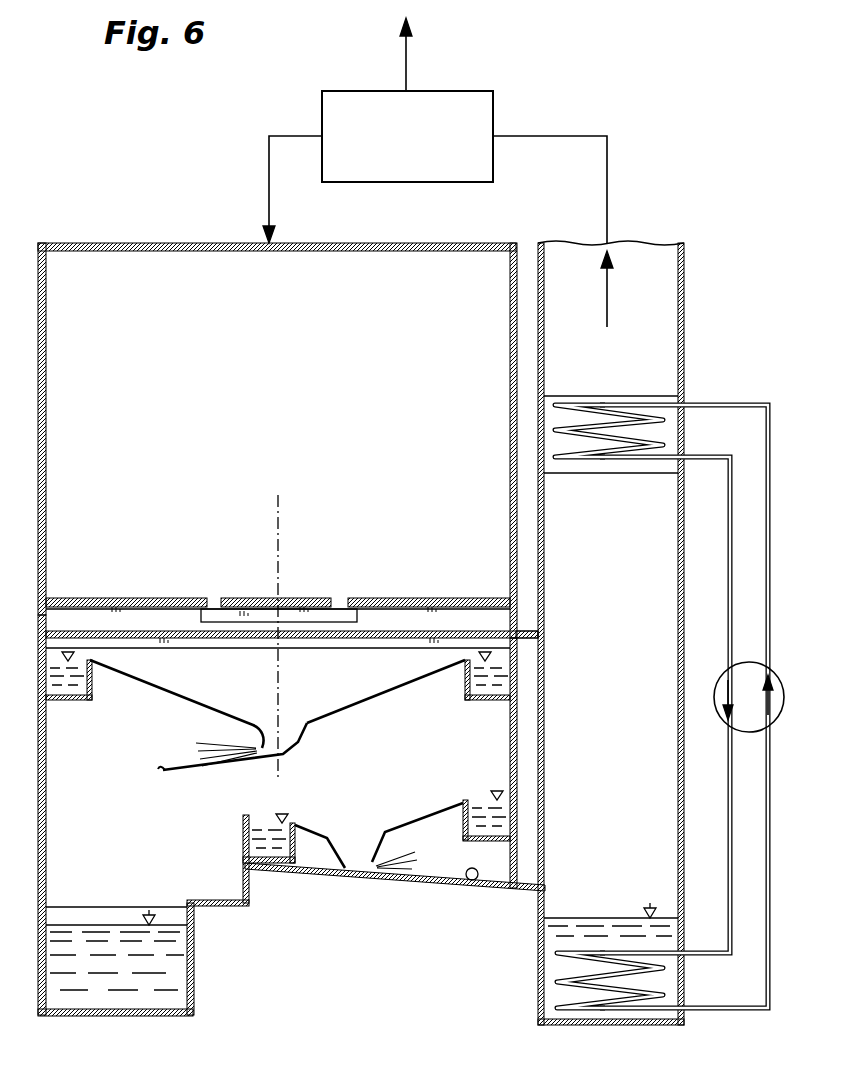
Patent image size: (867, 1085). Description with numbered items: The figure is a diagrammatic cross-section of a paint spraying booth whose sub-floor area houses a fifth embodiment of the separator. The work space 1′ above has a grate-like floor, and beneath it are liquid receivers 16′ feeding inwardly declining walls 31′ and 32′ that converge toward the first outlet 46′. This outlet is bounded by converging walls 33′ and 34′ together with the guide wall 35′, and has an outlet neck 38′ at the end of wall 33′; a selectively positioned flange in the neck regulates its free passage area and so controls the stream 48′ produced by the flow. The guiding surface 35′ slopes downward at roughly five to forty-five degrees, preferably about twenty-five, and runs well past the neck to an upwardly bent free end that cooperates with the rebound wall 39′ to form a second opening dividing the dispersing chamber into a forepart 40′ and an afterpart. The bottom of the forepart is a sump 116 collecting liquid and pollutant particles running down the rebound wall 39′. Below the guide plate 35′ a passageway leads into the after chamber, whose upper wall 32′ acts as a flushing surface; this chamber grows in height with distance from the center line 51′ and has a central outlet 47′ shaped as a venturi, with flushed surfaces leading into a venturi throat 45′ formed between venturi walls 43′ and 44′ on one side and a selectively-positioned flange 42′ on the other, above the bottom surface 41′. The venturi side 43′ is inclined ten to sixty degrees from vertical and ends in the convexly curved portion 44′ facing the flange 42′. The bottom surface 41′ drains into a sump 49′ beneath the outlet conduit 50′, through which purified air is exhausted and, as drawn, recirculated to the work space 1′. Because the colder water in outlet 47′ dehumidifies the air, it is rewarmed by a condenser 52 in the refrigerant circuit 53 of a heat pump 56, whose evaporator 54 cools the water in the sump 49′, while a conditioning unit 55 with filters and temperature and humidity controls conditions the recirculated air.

The work space 1′ is at (290, 385).
The liquid receivers 16′ is at (70, 690).
The inwardly declining wall 31′ is at (180, 696).
The inwardly declining wall 32′ is at (380, 697).
The converging wall 33′ is at (262, 735).
The converging wall 34′ is at (306, 727).
The guide wall 35′ is at (194, 764).
The outlet neck 38′ is at (248, 743).
The rebound wall 39′ is at (46, 843).
The forepart of the dispersing chamber 40′ is at (123, 763).
The bottom surface 41′ is at (472, 882).
The selectively-positioned flange 42′ is at (360, 868).
The venturi wall 43′ is at (376, 846).
The convexly curved portion 44′ is at (382, 855).
The venturi throat 45′ is at (413, 869).
The first outlet 46′ is at (284, 728).
The central outlet 47′ is at (350, 842).
The stream 48′ is at (200, 752).
The sump 49′ is at (610, 930).
The outlet conduit 50′ is at (667, 312).
The center line 51′ is at (280, 549).
The condenser 52 is at (590, 457).
The refrigerant circuit 53 is at (727, 405).
The evaporator 54 is at (560, 985).
The conditioning unit 55 is at (470, 98).
The heat pump 56 is at (722, 690).
The sump 116 is at (178, 973).